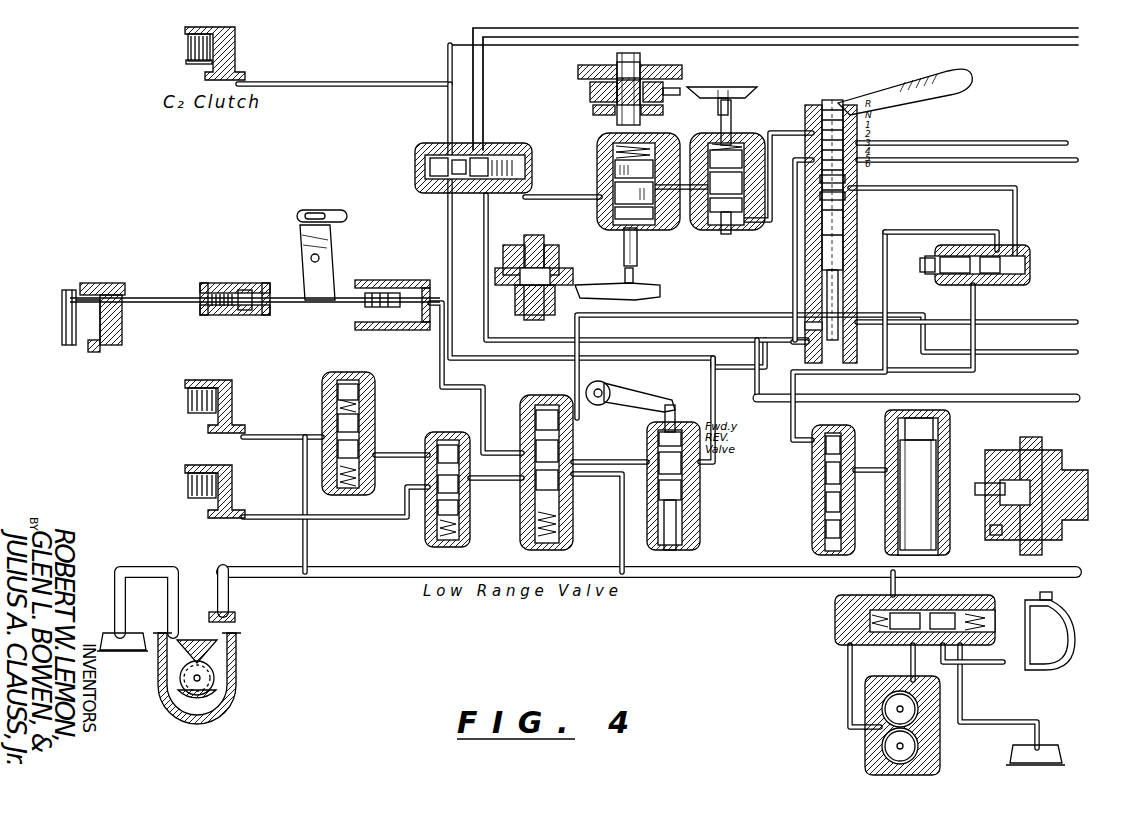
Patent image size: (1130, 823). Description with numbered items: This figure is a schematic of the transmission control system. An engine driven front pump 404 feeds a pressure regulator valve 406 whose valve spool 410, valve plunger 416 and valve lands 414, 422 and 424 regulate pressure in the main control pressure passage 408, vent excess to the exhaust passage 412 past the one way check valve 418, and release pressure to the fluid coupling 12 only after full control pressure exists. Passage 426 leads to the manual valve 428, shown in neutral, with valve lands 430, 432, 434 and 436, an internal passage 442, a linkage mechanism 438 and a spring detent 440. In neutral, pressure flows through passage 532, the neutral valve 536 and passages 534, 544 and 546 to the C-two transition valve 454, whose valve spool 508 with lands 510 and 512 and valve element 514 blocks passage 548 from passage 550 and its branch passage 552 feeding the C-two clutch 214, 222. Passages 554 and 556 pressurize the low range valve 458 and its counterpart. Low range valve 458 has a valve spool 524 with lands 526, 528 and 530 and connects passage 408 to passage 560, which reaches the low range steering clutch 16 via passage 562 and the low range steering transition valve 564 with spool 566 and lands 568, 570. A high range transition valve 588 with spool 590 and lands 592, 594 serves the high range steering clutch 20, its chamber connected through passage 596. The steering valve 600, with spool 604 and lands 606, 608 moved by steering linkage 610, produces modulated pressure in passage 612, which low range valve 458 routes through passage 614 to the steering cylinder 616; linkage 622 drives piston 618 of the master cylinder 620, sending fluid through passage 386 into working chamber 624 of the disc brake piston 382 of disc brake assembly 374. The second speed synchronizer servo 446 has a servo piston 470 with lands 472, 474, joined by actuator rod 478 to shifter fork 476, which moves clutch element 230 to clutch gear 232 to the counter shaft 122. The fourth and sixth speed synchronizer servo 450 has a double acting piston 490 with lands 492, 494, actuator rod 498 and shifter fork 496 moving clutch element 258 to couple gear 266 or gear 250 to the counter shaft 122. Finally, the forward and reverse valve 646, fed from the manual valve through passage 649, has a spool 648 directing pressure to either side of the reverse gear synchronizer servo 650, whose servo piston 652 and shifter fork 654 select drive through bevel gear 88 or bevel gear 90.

The fluid coupling 12 is at (1062, 612).
The low range steering clutch 16 is at (235, 468).
The high range steering clutch 20 is at (235, 383).
The bevel gear 88 is at (993, 536).
The bevel gear 90 is at (1050, 452).
The counter shaft 122 is at (640, 62).
The C2 clutch cylinder 214 is at (240, 38).
The clutch plates 222 is at (193, 62).
The synchronizer clutch element 230 is at (506, 300).
The gear 232 is at (505, 246).
The gear 250 is at (655, 117).
The clutch element 258 is at (590, 92).
The gear 266 is at (592, 68).
The disc brake assembly 374 is at (108, 282).
The disc brake piston 382 is at (95, 330).
The passage 386 is at (143, 296).
The engine driven front pump 404 is at (866, 750).
The pressure regulator valve 406 is at (840, 640).
The main control pressure passage 408 is at (797, 568).
The valve spool 410 is at (950, 655).
The low pressure fluid exhaust passage 412 is at (966, 698).
The valve land 414 is at (905, 612).
The valve plunger 416 is at (862, 620).
The one way check valve 418 is at (890, 586).
The valve land 422 is at (945, 612).
The valve land 424 is at (982, 614).
The passage 426 is at (972, 398).
The manual valve 428 is at (858, 212).
The valve land 430 is at (805, 332).
The valve land 432 is at (810, 278).
The valve land 434 is at (858, 197).
The valve land 436 is at (858, 180).
The mechanical linkage mechanism 438 is at (972, 80).
The spring detent 440 is at (810, 104).
The internal passage 442 is at (810, 260).
The second speed synchronizer servo 446 is at (600, 215).
The fourth and sixth speed synchronizer servo 450 is at (740, 214).
The C2 transition valve 454 is at (478, 148).
The low range valve 458 is at (560, 438).
The servo piston 470 is at (616, 182).
The valve land 472 is at (616, 155).
The valve land 474 is at (654, 190).
The shifter fork 476 is at (650, 298).
The actuator rod 478 is at (637, 258).
The double acting piston 490 is at (708, 160).
The valve land 492 is at (708, 178).
The valve land 494 is at (710, 215).
The shifter fork 496 is at (708, 87).
The actuator rod 498 is at (730, 135).
The valve spool 508 is at (489, 200).
The valve land 510 is at (440, 152).
The valve land 512 is at (480, 152).
The valve element 514 is at (424, 168).
The valve spool 524 is at (540, 492).
The valve land 526 is at (528, 403).
The valve land 528 is at (540, 468).
The valve land 530 is at (538, 512).
The passage 532 is at (883, 354).
The passage 534 is at (954, 188).
The neutral valve 536 is at (1030, 262).
The passage 544 is at (940, 322).
The passage 546 is at (960, 372).
The passage 548 is at (447, 232).
The passage 550 is at (474, 70).
The branch passage 552 is at (298, 82).
The passage 554 is at (734, 316).
The passage 556 is at (998, 352).
The passage 560 is at (504, 480).
The passage 562 is at (360, 517).
The low range steering transition valve 564 is at (449, 440).
The valve spool 566 is at (443, 505).
The valve land 568 is at (440, 448).
The valve land 570 is at (465, 540).
The high range transition valve 588 is at (330, 400).
The valve spool 590 is at (360, 405).
The valve land 592 is at (360, 392).
The valve land 594 is at (360, 430).
The passage 596 is at (360, 452).
The steering valve 600 is at (660, 430).
The valve spool 604 is at (658, 485).
The valve land 606 is at (658, 455).
The valve land 608 is at (700, 492).
The steering linkage mechanism 610 is at (606, 386).
The modulated steering pressure passage 612 is at (614, 474).
The passage 614 is at (496, 390).
The clutch-brake steering cylinder 616 is at (390, 280).
The piston 618 is at (228, 315).
The disc brake master cylinder 620 is at (268, 312).
The linkage 622 is at (330, 264).
The working chamber 624 is at (123, 318).
The forward and reverse valve 646 is at (836, 428).
The valve spool 648 is at (826, 518).
The passage 649 is at (795, 378).
The reverse gear synchronizer servo 650 is at (942, 420).
The servo piston 652 is at (903, 480).
The shifter fork 654 is at (975, 490).